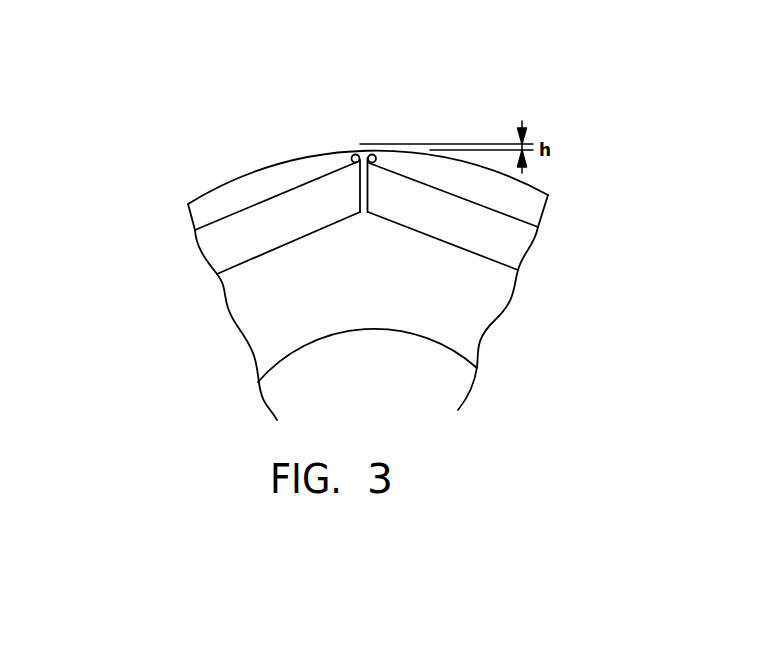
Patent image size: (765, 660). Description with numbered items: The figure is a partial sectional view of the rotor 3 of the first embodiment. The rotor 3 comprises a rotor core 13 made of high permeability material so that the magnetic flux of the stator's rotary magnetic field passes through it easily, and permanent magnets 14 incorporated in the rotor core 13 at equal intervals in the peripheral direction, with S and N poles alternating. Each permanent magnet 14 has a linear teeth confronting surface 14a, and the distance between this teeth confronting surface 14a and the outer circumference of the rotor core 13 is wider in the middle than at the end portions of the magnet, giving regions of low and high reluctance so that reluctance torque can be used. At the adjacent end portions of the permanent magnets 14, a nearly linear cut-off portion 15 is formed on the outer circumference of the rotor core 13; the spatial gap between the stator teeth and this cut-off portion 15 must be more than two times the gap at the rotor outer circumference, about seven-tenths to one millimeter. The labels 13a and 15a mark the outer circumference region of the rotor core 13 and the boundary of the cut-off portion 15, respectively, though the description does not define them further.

The rotor 3 is at (203, 194).
The rotor core 13 is at (248, 318).
The outer peripheral surface of yoke 13a is at (240, 193).
The permanent magnet 14 is at (211, 247).
The teeth confronting surface 14a is at (277, 198).
The cut-off portion 15 is at (348, 148).
The slit opening edge 15a is at (293, 159).